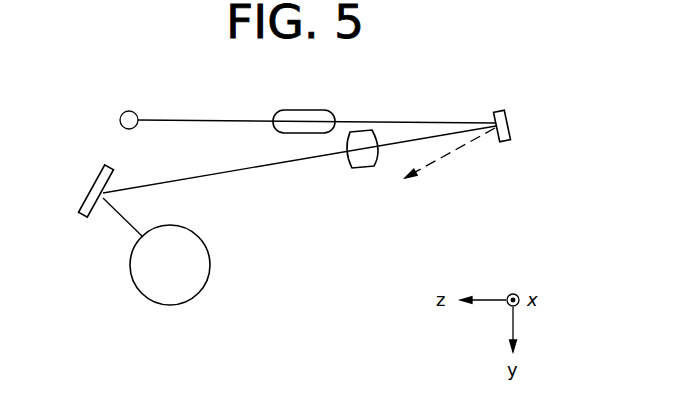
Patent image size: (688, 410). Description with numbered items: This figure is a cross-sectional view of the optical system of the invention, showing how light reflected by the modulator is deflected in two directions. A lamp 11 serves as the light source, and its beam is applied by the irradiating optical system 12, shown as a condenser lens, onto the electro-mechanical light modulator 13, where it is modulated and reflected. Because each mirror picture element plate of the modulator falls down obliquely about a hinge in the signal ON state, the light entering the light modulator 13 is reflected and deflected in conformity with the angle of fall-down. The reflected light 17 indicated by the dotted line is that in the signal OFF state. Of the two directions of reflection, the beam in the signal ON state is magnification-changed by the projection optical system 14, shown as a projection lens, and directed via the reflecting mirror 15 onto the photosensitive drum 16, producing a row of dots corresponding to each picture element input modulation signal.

The lamp 11 is at (122, 114).
The irradiating optical system 12 is at (302, 110).
The electro-mechanical light modulator 13 is at (508, 123).
The projection optical system 14 is at (364, 169).
The reflecting mirror 15 is at (86, 192).
The photosensitive drum 16 is at (210, 267).
The reflected light 17 is at (457, 147).